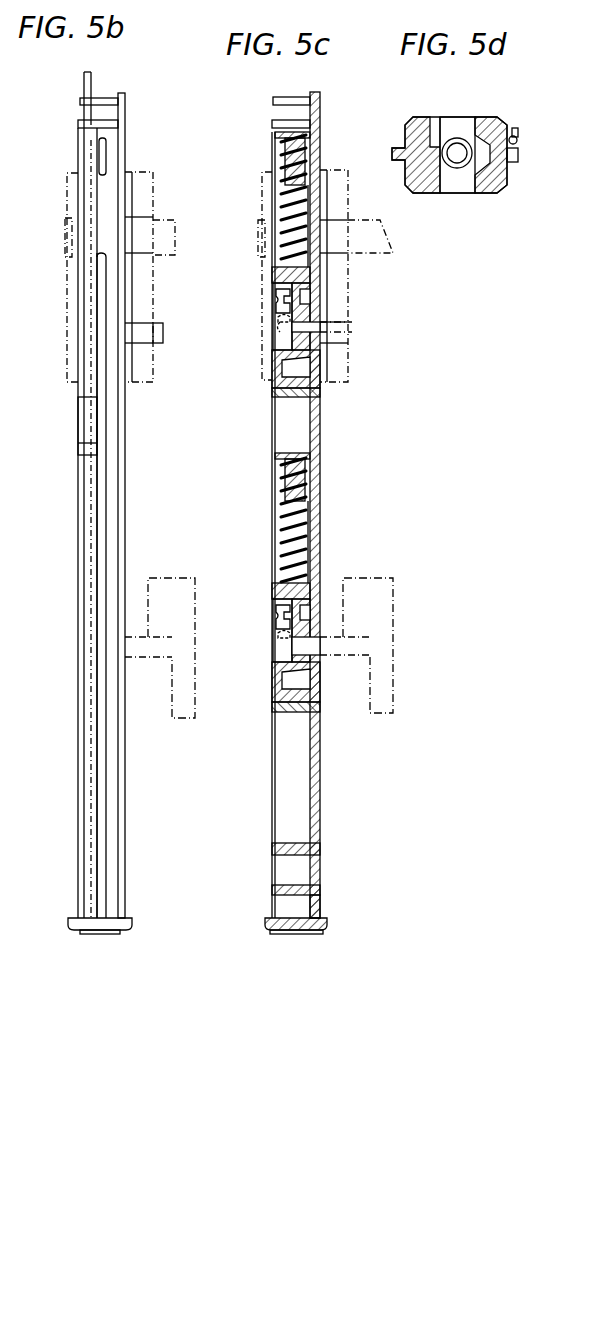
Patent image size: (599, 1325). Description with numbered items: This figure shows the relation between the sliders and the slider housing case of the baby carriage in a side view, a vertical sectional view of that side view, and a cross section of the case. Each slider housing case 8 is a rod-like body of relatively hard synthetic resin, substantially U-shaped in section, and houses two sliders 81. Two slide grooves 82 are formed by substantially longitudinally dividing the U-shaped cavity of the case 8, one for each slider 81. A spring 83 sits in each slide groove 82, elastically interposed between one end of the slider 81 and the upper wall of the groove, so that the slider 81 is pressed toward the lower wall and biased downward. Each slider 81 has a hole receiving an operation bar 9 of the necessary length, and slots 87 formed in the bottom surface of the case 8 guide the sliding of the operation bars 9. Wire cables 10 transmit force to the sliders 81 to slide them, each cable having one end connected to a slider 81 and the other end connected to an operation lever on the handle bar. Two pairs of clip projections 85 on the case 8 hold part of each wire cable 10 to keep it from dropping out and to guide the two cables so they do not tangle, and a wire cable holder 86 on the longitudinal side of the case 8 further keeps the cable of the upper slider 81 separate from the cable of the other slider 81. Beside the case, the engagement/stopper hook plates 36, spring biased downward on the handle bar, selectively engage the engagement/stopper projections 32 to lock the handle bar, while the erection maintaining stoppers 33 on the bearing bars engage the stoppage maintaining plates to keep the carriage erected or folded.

In FIG. 5b, the slider housing case 8 is at (77, 803).
In FIG. 5c, the slider housing case 8 is at (320, 822).
In FIG. 5d, the slider housing case 8 is at (487, 198).
In FIG. 5b, the operation bar 9 is at (165, 330).
In FIG. 5c, the operation bar 9 is at (283, 330).
In FIG. 5d, the wire cable 10 is at (515, 128).
In FIG. 5b, the engagement/stopper projection 32 is at (170, 222).
In FIG. 5c, the engagement/stopper projection 32 is at (373, 240).
In FIG. 5b, the erection maintaining stopper 33 is at (161, 580).
In FIG. 5c, the erection maintaining stopper 33 is at (385, 610).
In FIG. 5b, the engagement/stopper hook plate 36 is at (138, 172).
In FIG. 5c, the engagement/stopper hook plate 36 is at (330, 172).
In FIG. 5c, the slider 81 is at (272, 390).
In FIG. 5d, the slide groove 82 is at (480, 122).
In FIG. 5c, the spring 83 is at (283, 168).
In FIG. 5b, the clip projection 85 is at (78, 447).
In FIG. 5d, the wire cable holder 86 is at (520, 143).
In FIG. 5c, the slot 87 is at (318, 295).
In FIG. 5d, the slot 87 is at (460, 194).